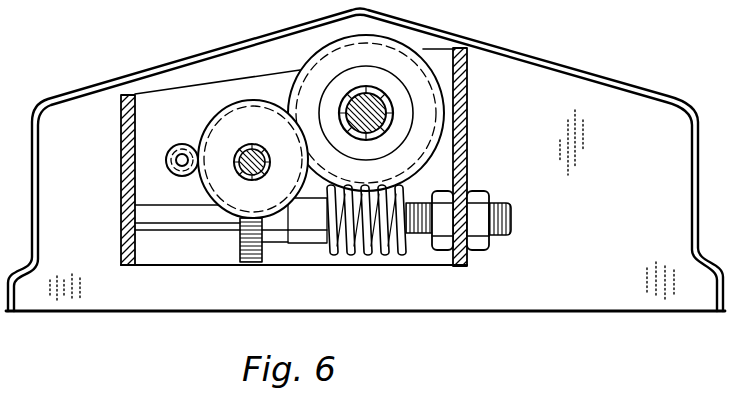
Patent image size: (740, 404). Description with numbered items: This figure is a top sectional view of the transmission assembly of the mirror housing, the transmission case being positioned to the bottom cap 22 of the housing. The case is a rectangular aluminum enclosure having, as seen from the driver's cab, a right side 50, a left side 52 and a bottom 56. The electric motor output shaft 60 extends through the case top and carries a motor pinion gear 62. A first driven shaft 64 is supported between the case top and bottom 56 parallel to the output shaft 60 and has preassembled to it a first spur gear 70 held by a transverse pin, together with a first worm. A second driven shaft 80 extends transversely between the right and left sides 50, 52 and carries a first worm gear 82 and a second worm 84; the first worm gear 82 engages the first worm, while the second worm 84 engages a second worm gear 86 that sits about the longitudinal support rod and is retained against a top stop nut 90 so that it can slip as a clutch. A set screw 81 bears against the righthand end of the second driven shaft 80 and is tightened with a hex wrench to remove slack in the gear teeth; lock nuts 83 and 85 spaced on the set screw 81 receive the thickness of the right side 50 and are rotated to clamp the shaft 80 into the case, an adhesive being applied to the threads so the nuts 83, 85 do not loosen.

The bottom cap 22 is at (647, 203).
The right side 50 is at (468, 100).
The left side 52 is at (121, 173).
The bottom 56 is at (200, 116).
The output shaft 60 is at (182, 162).
The motor pinion gear 62 is at (197, 150).
The first driven shaft 64 is at (237, 168).
The first spur gear 70 is at (257, 137).
The second driven shaft 80 is at (134, 240).
The set screw 81 is at (507, 238).
The first worm gear 82 is at (250, 263).
The nut 83 is at (476, 250).
The second worm 84 is at (377, 250).
The nut 85 is at (438, 250).
The second worm gear 86 is at (438, 140).
The top stop nut 90 is at (373, 68).